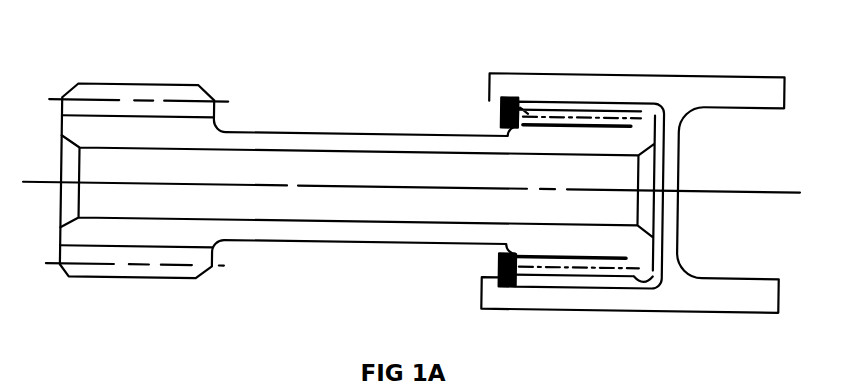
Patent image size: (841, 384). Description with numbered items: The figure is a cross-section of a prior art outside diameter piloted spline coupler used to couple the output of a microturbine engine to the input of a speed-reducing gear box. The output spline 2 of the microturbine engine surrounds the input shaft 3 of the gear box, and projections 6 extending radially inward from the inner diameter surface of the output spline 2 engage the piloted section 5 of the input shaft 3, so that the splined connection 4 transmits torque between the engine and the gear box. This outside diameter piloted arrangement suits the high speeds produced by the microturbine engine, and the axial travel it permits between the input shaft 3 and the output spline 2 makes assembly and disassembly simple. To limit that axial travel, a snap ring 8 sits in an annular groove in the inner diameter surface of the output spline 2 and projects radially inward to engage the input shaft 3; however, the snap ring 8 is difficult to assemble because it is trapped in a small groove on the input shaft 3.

The output spline 2 is at (735, 81).
The input shaft 3 is at (370, 138).
The splined connection 4 is at (588, 56).
The piloted section 5 is at (643, 104).
The projections 6 is at (548, 110).
The snap ring 8 is at (497, 99).